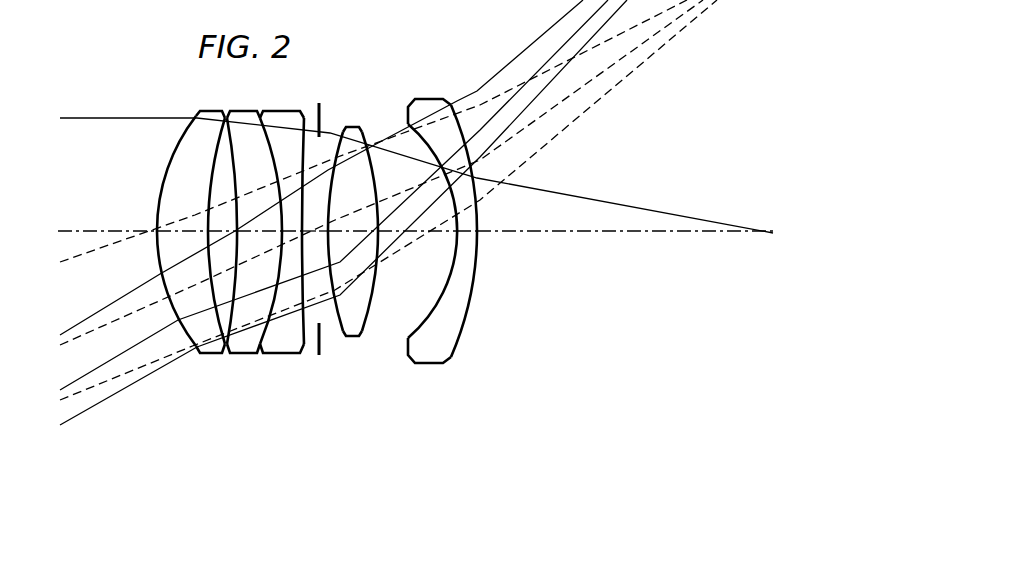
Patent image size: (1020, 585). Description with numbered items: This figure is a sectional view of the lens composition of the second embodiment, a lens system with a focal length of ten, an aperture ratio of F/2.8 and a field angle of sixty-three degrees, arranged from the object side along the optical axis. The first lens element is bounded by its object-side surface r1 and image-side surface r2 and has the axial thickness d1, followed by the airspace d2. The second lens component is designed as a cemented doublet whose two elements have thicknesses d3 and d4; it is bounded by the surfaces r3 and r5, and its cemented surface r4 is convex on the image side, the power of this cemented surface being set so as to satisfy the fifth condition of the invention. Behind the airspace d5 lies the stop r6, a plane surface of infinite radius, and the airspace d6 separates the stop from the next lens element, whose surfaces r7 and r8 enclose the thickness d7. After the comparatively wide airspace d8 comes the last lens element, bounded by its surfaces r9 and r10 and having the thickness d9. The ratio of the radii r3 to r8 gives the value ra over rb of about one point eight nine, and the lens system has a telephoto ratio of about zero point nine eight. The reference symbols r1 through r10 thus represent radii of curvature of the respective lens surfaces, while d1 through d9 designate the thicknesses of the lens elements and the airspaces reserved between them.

The radius of curvature of first surface r1 is at (183, 336).
The radius of curvature of second surface r2 is at (216, 335).
The radius of curvature of third surface r3 is at (231, 326).
The radius of curvature of fourth surface r4 is at (272, 330).
The radius of curvature of fifth surface r5 is at (305, 327).
The stop r6 is at (322, 340).
The radius of curvature of seventh surface r7 is at (338, 328).
The radius of curvature of eighth surface r8 is at (368, 322).
The radius of curvature of ninth surface r9 is at (405, 327).
The radius of curvature of tenth surface r10 is at (460, 324).
The thickness of first lens element d1 is at (187, 228).
The airspace between first and second lens components d2 is at (210, 200).
The thickness of first element of cemented doublet d3 is at (251, 228).
The thickness of second element of cemented doublet d4 is at (290, 196).
The airspace between second lens component and stop d5 is at (314, 202).
The airspace between stop and following lens element d6 is at (330, 215).
The thickness of lens element following the stop d7 is at (365, 208).
The airspace between lens element following stop and last lens element d8 is at (438, 232).
The thickness of last lens element d9 is at (466, 236).